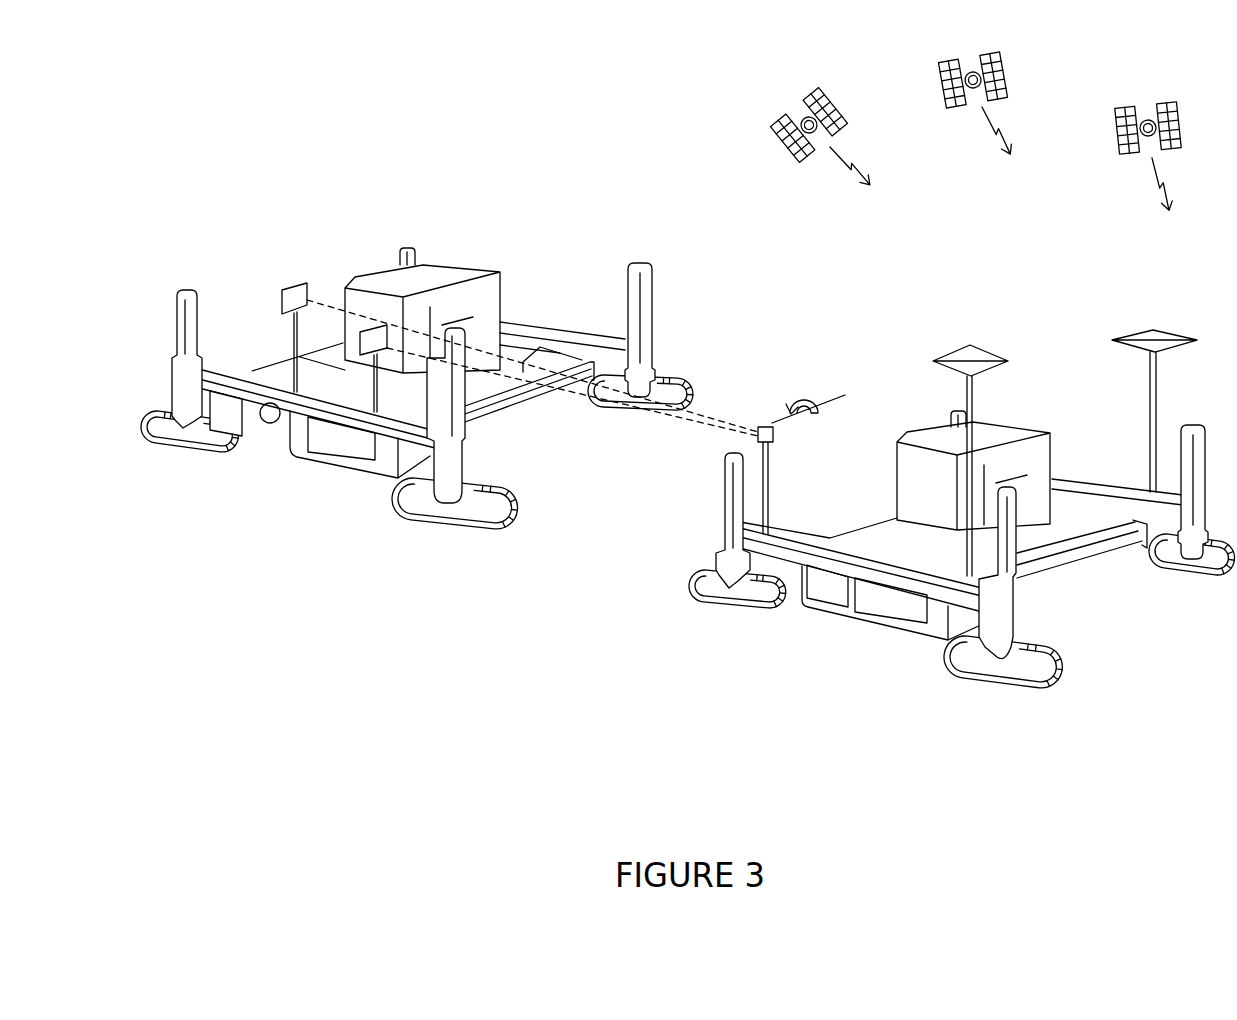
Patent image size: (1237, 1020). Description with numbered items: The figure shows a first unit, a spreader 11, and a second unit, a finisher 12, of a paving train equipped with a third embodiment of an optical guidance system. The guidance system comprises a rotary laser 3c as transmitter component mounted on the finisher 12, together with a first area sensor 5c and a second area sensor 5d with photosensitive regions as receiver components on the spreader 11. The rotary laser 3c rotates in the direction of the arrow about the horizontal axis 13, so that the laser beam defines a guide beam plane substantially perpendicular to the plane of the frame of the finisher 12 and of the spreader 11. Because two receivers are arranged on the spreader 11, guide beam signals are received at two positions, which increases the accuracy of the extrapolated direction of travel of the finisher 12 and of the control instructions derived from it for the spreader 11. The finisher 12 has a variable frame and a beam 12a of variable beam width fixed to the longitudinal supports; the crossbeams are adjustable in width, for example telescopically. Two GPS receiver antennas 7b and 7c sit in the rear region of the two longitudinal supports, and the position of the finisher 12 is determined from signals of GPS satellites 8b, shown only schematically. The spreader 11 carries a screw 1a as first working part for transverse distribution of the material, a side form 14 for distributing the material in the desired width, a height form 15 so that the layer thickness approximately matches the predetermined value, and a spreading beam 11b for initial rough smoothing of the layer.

The GPS satellites 8b is at (738, 97).
The spreader 11 is at (416, 372).
The second area sensor 5d is at (280, 299).
The first area sensor 5c is at (360, 340).
The side form 14 is at (230, 428).
The height form 15 is at (268, 373).
The screw 1a is at (270, 423).
The spreading beam 11b is at (378, 467).
The horizontal axis 13 is at (842, 385).
The rotary laser 3c is at (773, 438).
The GPS receiver antenna 7c is at (963, 357).
The finisher 12 is at (962, 475).
The GPS receiver antenna 7b is at (1155, 333).
The beam 12a is at (873, 610).